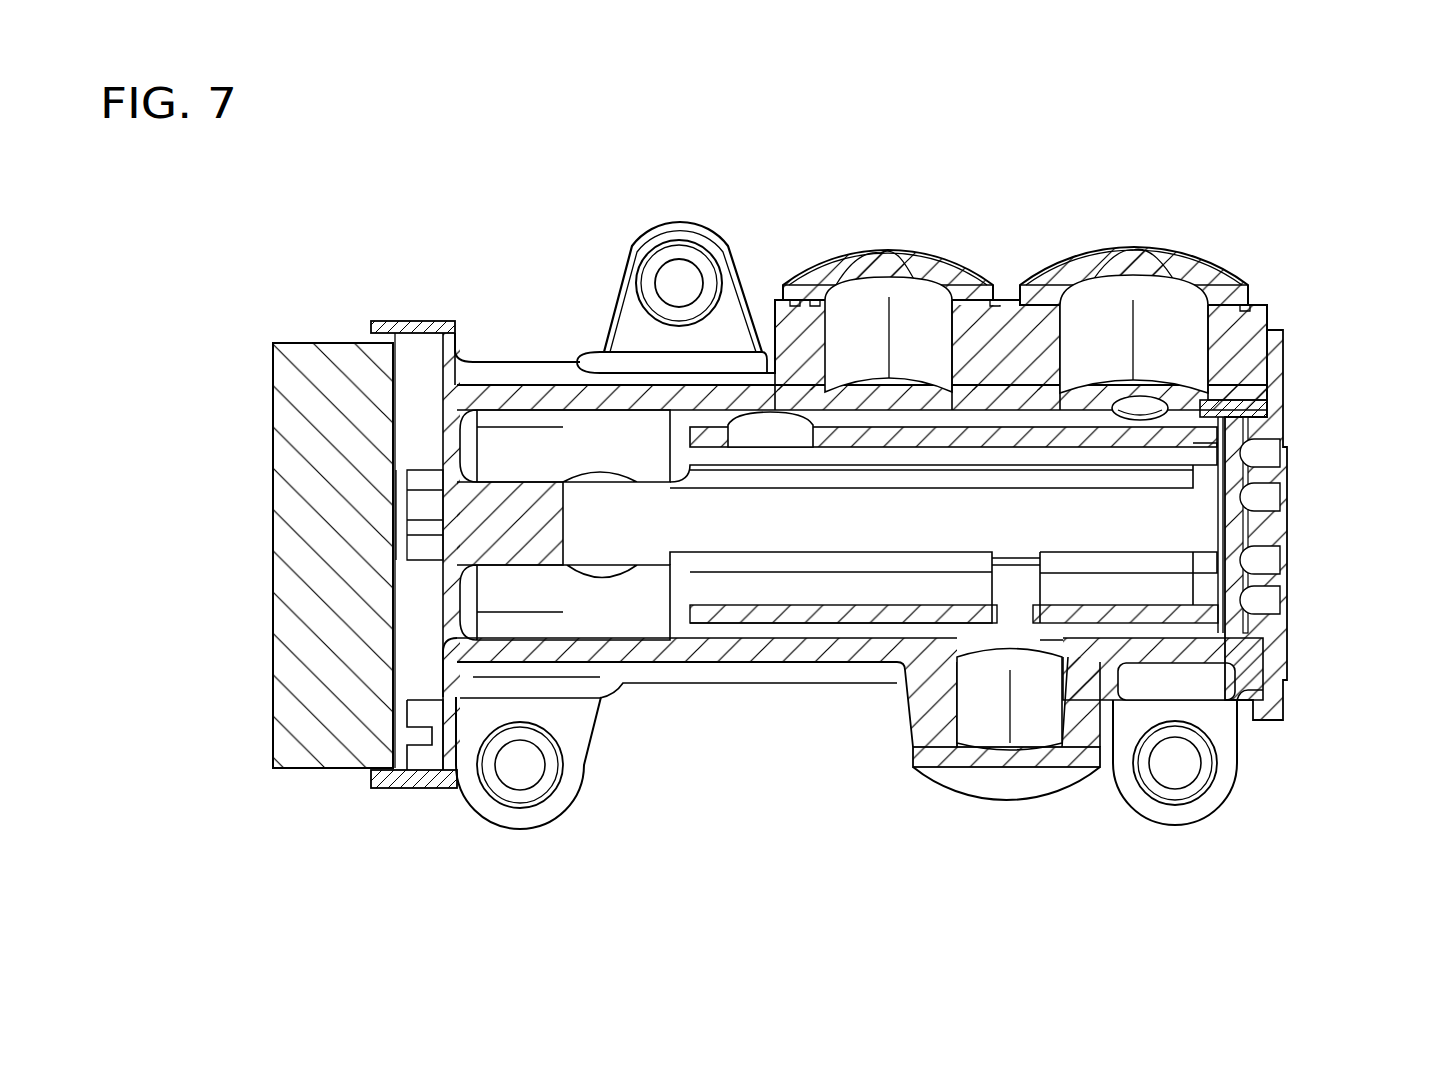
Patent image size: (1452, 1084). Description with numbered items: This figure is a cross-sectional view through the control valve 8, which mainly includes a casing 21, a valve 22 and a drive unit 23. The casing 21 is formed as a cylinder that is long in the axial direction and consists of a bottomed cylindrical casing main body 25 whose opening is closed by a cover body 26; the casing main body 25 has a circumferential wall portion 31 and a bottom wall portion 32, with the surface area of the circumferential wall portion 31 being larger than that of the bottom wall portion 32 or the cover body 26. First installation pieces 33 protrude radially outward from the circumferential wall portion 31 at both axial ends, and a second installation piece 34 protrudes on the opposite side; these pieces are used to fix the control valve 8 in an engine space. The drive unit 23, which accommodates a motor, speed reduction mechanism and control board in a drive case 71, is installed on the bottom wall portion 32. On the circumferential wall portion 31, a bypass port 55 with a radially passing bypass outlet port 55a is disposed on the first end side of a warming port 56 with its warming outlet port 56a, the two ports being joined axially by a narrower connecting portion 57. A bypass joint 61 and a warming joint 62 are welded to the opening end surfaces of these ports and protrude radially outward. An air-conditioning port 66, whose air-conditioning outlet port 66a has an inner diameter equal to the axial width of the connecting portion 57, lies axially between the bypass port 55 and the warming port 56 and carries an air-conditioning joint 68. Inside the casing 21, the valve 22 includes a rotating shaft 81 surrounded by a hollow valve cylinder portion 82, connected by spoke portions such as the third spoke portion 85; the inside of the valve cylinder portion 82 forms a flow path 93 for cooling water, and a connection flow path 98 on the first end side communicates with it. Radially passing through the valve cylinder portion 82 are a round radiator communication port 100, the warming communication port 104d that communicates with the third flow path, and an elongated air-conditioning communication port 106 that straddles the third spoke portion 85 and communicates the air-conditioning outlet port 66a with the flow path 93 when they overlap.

The control valve 8 is at (1285, 243).
The casing 21 is at (1375, 656).
The valve 22 is at (1223, 432).
The drive unit 23 is at (272, 405).
The casing main body 25 is at (1188, 665).
The cover body 26 is at (1277, 670).
The circumferential wall portion 31 is at (725, 684).
The bottom wall portion 32 is at (447, 738).
The first installation piece 33 is at (522, 822).
The second installation piece 34 is at (667, 232).
The bypass port 55 is at (735, 432).
The bypass outlet port 55a is at (927, 337).
The warming port 56 is at (1243, 323).
The warming outlet port 56a is at (1178, 330).
The connecting portion 57 is at (1005, 325).
The bypass joint 61 is at (838, 262).
The warming joint 62 is at (1060, 262).
The air-conditioning port 66 is at (927, 710).
The air-conditioning outlet port 66a is at (1010, 690).
The air-conditioning joint 68 is at (1012, 792).
The drive case 71 is at (342, 357).
The rotating shaft 81 is at (1178, 517).
The valve cylinder portion 82 is at (1205, 406).
The third spoke portion 85 is at (815, 595).
The flow path 93 is at (1108, 513).
The connection flow path 98 is at (633, 597).
The radiator communication port 100 is at (718, 278).
The warming communication port 104d is at (1140, 404).
The air-conditioning communication port 106 is at (1027, 665).